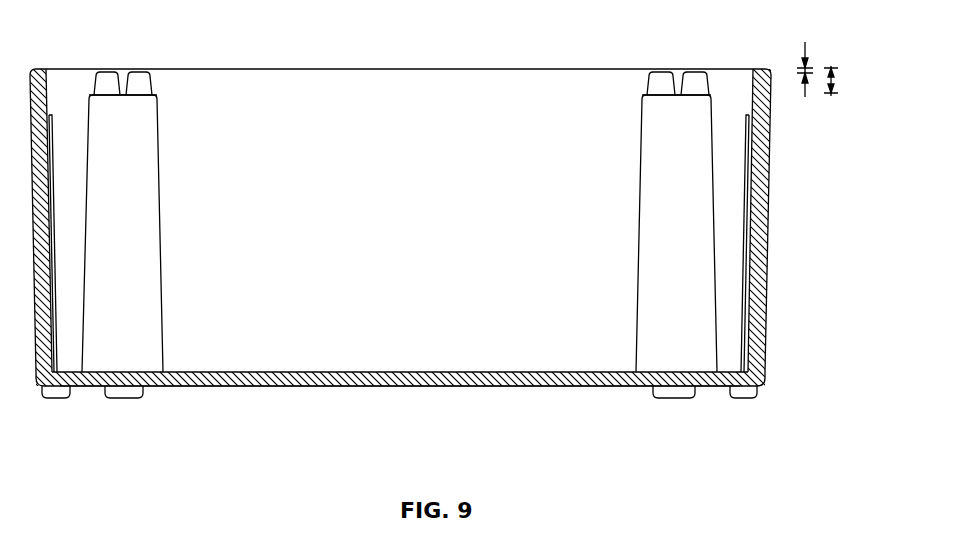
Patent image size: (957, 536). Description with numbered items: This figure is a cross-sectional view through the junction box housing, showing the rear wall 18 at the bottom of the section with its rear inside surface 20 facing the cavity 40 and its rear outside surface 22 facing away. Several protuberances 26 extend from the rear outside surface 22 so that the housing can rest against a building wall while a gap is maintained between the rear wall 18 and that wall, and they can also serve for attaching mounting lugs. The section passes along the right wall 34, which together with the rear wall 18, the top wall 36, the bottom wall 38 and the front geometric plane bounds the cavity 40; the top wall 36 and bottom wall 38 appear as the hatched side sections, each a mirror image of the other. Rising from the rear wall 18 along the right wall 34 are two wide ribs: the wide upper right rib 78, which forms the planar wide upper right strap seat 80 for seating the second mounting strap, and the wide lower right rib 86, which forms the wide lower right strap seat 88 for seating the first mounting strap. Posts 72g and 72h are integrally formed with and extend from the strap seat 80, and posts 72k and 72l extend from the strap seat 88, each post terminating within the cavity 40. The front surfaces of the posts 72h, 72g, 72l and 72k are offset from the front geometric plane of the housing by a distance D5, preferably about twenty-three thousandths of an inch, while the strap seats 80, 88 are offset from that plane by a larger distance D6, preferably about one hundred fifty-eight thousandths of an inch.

The rear wall 18 is at (298, 378).
The rear inside surface 20 is at (406, 372).
The rear outside surface 22 is at (400, 386).
The protuberances 26 is at (55, 398).
The right wall 34 is at (497, 80).
The top wall 36 is at (42, 170).
The bottom wall 38 is at (762, 188).
The cavity 40 is at (266, 150).
The post 72g is at (140, 78).
The post 72h is at (104, 78).
The post 72k is at (696, 78).
The post 72l is at (661, 78).
The wide upper right rib 78 is at (153, 240).
The wide upper right strap seat 80 is at (92, 94).
The wide lower right rib 86 is at (651, 208).
The wide lower right strap seat 88 is at (646, 94).
The distance D5 is at (815, 72).
The distance D6 is at (834, 80).